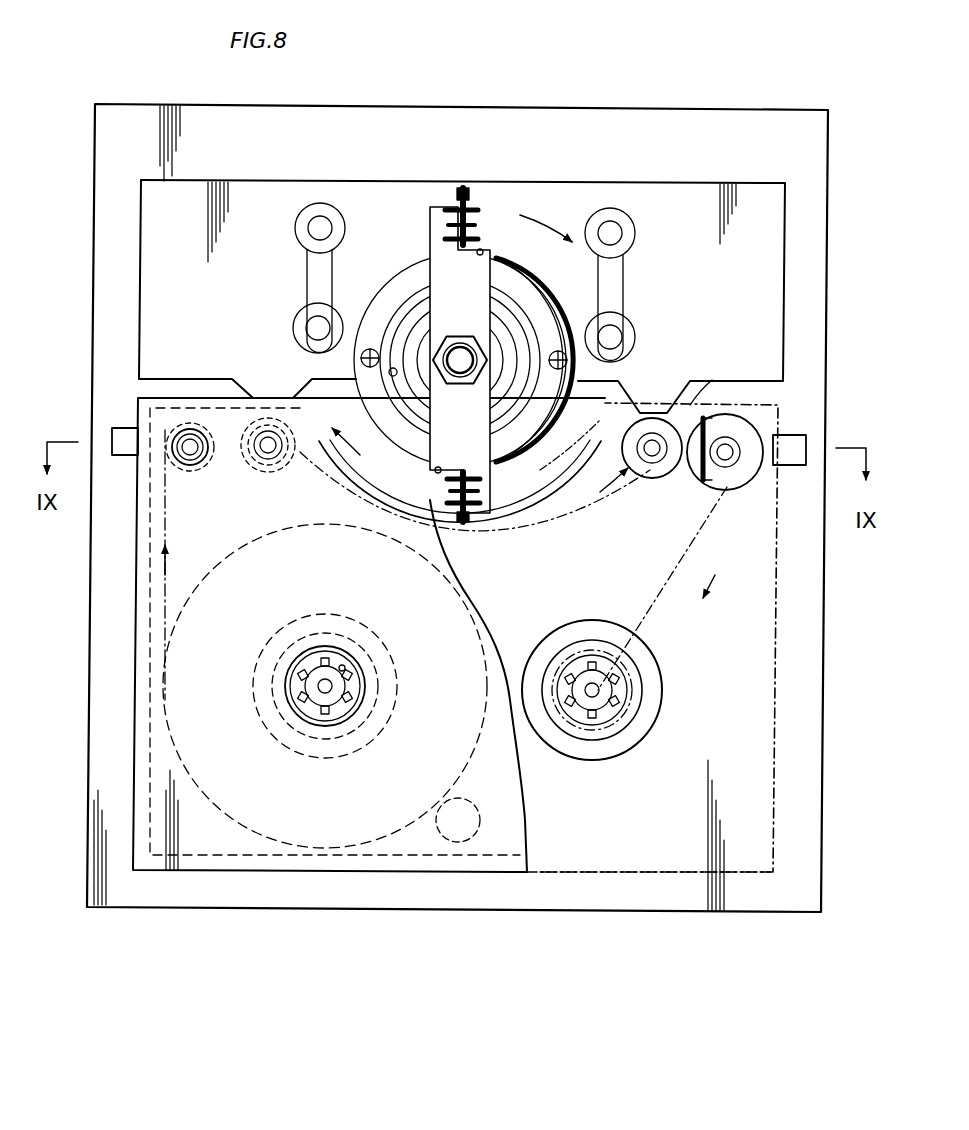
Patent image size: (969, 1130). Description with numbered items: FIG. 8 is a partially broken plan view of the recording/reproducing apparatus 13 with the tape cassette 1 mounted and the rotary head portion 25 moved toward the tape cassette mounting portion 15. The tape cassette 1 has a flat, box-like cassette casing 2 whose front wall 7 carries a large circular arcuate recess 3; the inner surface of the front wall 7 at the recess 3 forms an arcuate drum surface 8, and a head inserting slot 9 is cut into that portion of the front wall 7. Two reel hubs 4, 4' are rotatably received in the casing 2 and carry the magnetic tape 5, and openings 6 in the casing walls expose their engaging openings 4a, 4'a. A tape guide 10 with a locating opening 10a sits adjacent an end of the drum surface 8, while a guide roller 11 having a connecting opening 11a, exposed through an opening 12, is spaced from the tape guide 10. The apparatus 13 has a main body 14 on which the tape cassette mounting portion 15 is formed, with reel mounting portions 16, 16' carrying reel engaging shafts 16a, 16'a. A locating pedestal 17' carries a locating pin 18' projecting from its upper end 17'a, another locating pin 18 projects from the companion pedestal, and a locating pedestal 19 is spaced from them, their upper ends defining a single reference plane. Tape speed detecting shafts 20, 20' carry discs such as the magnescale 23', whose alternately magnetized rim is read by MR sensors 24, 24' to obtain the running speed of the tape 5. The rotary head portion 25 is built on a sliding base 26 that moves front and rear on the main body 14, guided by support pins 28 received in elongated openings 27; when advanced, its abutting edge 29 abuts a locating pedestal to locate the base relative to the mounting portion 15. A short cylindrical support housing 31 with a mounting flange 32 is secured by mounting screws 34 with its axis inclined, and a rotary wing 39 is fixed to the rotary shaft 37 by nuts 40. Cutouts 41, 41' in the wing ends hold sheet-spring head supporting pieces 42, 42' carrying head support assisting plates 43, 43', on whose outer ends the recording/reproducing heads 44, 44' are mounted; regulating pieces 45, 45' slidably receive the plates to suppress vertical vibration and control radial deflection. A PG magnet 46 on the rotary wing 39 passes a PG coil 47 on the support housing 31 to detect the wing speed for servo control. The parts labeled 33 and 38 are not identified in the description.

The tape cassette 1 is at (240, 880).
The cassette casing 2 is at (130, 798).
The circular arcuate recess 3 is at (350, 480).
The reel hub 4 is at (327, 715).
The engaging opening 4a is at (306, 692).
The reel hub 4' is at (592, 666).
The engaging opening 4'a is at (587, 729).
The magnetic tape 5 is at (524, 520).
The opening 6 is at (308, 722).
The front wall 7 is at (150, 397).
The arcuate drum surface 8 is at (366, 512).
The head inserting slot 9 is at (533, 500).
The tape guide 10 is at (258, 472).
The locating opening 10a is at (272, 467).
The guide roller 11 is at (185, 472).
The connecting opening 11a is at (226, 438).
The opening 12 is at (204, 460).
The recording/reproducing apparatus 13 is at (740, 100).
The main body 14 is at (592, 108).
The tape cassette mounting portion 15 is at (625, 862).
The reel mounting portion 16 is at (325, 686).
The reel engaging shaft 16a is at (345, 670).
The reel mounting portion 16' is at (607, 714).
The reel engaging shaft 16'a is at (639, 690).
The locating pedestal 17' is at (650, 475).
The upper end 17'a is at (598, 501).
The locating pin 18 is at (272, 400).
The locating pin 18' is at (668, 483).
The locating pedestal 19 is at (480, 822).
The tape speed detecting shaft 20 is at (177, 399).
The tape speed detecting shaft 20' is at (728, 473).
The magnescale 23' is at (732, 406).
The magneto-resistance effect element 24 is at (90, 420).
The magneto-resistance effect element 24' is at (797, 479).
The rotary head portion 25 is at (432, 196).
The sliding base 26 is at (760, 186).
The elongated opening 27 is at (304, 268).
The support pin 28 is at (320, 216).
The abutting edge 29 is at (312, 416).
The support housing 31 is at (508, 286).
The mounting flange 32 is at (540, 302).
The rotary disc 33 is at (518, 327).
The mounting screw 34 is at (370, 350).
The rotary shaft 37 is at (458, 378).
The drum flange 38 is at (515, 380).
The rotary wing 39 is at (425, 262).
The nut 40 is at (462, 343).
The cutout 41 is at (470, 269).
The cutout 41' is at (456, 449).
The head supporting piece 42 is at (458, 194).
The head supporting piece 42' is at (468, 544).
The head support assisting plate 43 is at (480, 163).
The head support assisting plate 43' is at (504, 552).
The recording/reproducing head 44 is at (452, 192).
The recording/reproducing head 44' is at (486, 529).
The regulating piece 45 is at (476, 214).
The regulating piece 45' is at (423, 536).
The PG magnet 46 is at (441, 292).
The PG coil 47 is at (394, 377).